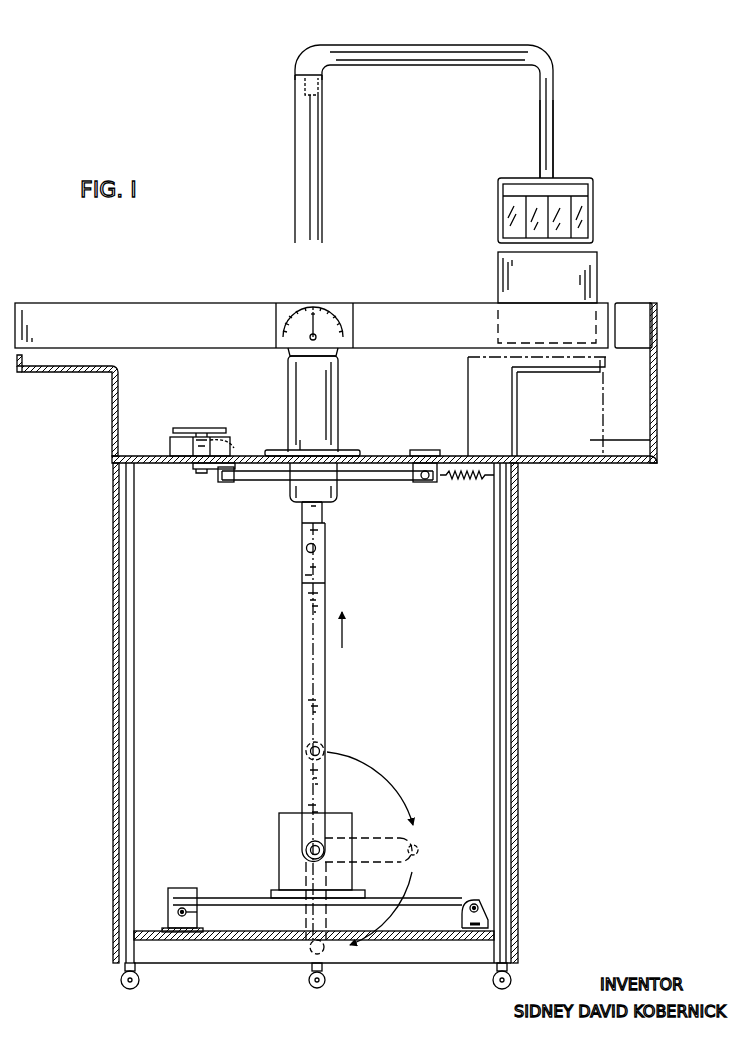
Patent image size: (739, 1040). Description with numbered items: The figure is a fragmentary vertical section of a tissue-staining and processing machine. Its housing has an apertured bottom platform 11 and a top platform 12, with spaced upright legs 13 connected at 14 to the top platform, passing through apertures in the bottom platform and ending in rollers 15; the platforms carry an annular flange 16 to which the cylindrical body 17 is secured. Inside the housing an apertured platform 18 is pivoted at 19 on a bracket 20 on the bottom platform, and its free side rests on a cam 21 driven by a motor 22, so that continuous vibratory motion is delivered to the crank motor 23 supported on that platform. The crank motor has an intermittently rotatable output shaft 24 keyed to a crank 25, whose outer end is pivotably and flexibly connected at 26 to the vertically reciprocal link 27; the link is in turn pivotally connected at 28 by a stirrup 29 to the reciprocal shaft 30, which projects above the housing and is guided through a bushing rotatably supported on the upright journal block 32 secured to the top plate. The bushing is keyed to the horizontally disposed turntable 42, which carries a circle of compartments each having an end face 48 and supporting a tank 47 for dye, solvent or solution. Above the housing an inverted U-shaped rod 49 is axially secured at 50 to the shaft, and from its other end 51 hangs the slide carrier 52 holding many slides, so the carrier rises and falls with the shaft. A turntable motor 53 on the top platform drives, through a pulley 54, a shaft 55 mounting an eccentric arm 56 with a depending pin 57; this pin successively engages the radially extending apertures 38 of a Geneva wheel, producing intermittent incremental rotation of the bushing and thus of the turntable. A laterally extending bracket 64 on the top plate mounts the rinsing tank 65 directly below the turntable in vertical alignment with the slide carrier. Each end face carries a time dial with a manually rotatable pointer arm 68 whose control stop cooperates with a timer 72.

The bottom platform 11 is at (134, 931).
The top platform 12 is at (163, 465).
The upright legs 13 is at (135, 712).
The leg connection 14 is at (118, 455).
The rollers 15 is at (130, 989).
The annular flange 16 is at (512, 478).
The cylindrical body 17 is at (113, 740).
The apertured platform 18 is at (441, 900).
The pivot 19 is at (480, 905).
The bracket 20 is at (488, 914).
The cam 21 is at (198, 916).
The motor 22 is at (190, 888).
The crank motor 23 is at (279, 852).
The output shaft 24 is at (322, 848).
The crank 25 is at (302, 790).
The pivotal connection 26 is at (322, 752).
The link 27 is at (325, 689).
The pivotal connection 28 is at (320, 560).
The stirrup 29 is at (320, 555).
The reciprocal shaft 30 is at (308, 141).
The journal block 32 is at (338, 370).
The radially extending apertures 38 is at (228, 472).
The turntable 42 is at (128, 297).
The tank 47 is at (597, 279).
The end face 48 is at (284, 312).
The inverted U-shaped rod 49 is at (449, 62).
The axial securing point 50 is at (300, 88).
The other end of rod 51 is at (557, 150).
The slide carrier 52 is at (597, 221).
The turntable motor 53 is at (172, 438).
The pulley 54 is at (188, 428).
The shaft 55 is at (226, 440).
The eccentric arm 56 is at (202, 473).
The depending pin 57 is at (223, 481).
The bracket 64 is at (590, 462).
The rinsing tank 65 is at (468, 425).
The pointer arm 68 is at (318, 327).
The timer 72 is at (642, 355).